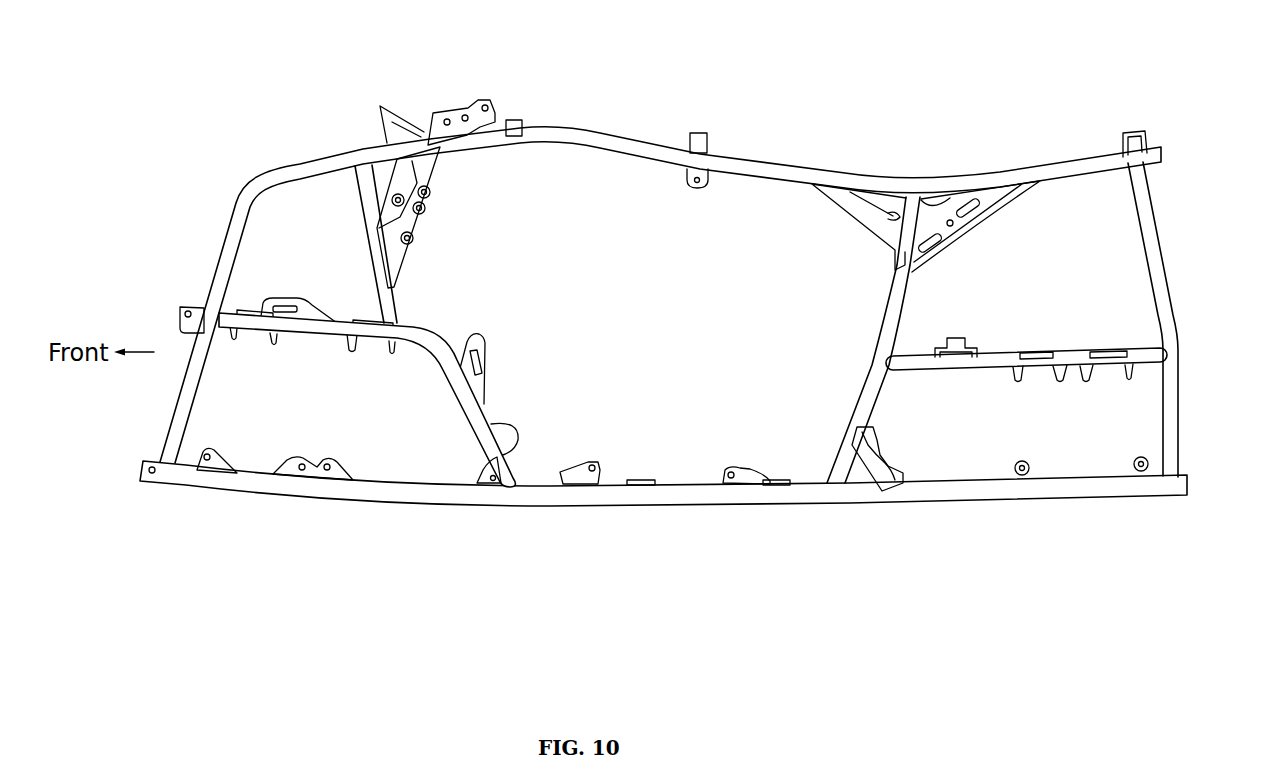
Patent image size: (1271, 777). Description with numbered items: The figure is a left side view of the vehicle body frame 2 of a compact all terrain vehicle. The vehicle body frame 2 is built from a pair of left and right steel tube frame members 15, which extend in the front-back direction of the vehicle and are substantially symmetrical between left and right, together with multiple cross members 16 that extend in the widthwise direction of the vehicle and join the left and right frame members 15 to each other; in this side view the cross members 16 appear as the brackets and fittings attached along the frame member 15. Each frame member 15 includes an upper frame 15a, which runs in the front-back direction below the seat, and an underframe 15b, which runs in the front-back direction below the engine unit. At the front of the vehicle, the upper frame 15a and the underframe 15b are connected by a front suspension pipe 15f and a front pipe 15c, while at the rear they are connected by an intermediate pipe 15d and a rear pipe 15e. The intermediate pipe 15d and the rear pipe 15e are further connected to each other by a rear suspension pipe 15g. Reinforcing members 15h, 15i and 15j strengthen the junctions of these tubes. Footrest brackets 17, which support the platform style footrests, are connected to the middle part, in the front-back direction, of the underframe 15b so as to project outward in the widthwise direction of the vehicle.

The vehicle body frame 2 is at (290, 146).
The frame member 15 is at (782, 150).
The upper frame 15a is at (633, 135).
The underframe 15b is at (605, 506).
The front pipe 15c is at (404, 297).
The intermediate pipe 15d is at (878, 334).
The rear pipe 15e is at (1172, 256).
The front suspension pipe 15f is at (305, 337).
The rear suspension pipe 15g is at (1020, 350).
The reinforcing member 15h is at (426, 218).
The reinforcing member 15i is at (841, 200).
The reinforcing member 15j is at (977, 222).
The cross member 16 is at (455, 110).
The footrest bracket 17 is at (641, 480).